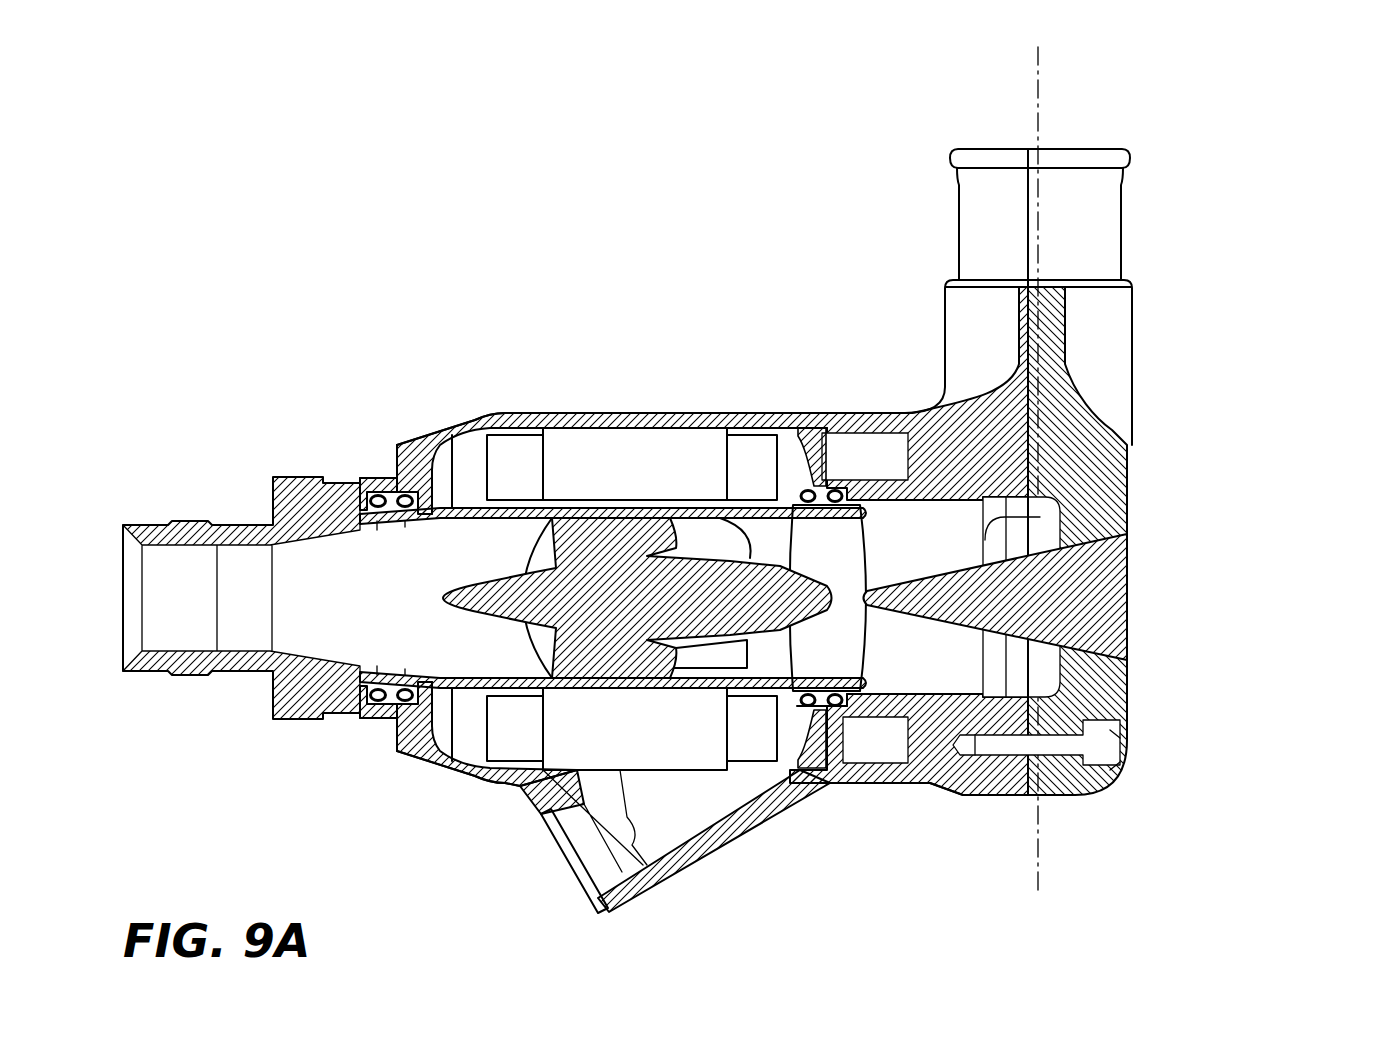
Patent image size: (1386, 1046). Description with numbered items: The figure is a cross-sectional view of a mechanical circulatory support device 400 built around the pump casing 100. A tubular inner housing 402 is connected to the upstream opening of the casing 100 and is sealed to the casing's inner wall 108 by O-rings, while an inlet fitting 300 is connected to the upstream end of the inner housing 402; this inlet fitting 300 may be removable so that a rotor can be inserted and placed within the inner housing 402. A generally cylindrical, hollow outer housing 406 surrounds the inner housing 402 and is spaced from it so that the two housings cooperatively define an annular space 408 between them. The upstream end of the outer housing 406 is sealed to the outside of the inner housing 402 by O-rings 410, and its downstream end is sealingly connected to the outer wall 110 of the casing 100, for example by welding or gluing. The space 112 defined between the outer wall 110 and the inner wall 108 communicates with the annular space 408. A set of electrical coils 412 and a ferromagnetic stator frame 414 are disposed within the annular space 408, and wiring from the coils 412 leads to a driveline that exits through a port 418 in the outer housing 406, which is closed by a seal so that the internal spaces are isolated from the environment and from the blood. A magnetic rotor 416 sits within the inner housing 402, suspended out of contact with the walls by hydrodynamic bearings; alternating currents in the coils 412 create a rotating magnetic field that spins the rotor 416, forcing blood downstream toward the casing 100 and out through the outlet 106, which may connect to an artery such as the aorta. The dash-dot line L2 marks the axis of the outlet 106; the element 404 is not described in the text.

The casing 100 is at (882, 531).
The outlet 106 is at (1125, 198).
The inner wall 108 is at (838, 782).
The outer wall 110 is at (925, 783).
The space 112 is at (878, 747).
The inlet fitting 300 is at (288, 718).
The mechanical circulatory support device 400 is at (625, 584).
The inner housing 402 is at (750, 512).
The end plate 404 is at (800, 500).
The outer housing 406 is at (467, 423).
The annular space 408 is at (403, 448).
The O-rings 410 is at (367, 708).
The electrical coils 412 is at (512, 448).
The ferromagnetic stator frame 414 is at (635, 453).
The magnetic rotor 416 is at (613, 650).
The port 418 is at (557, 845).
The axis L2 is at (1038, 60).